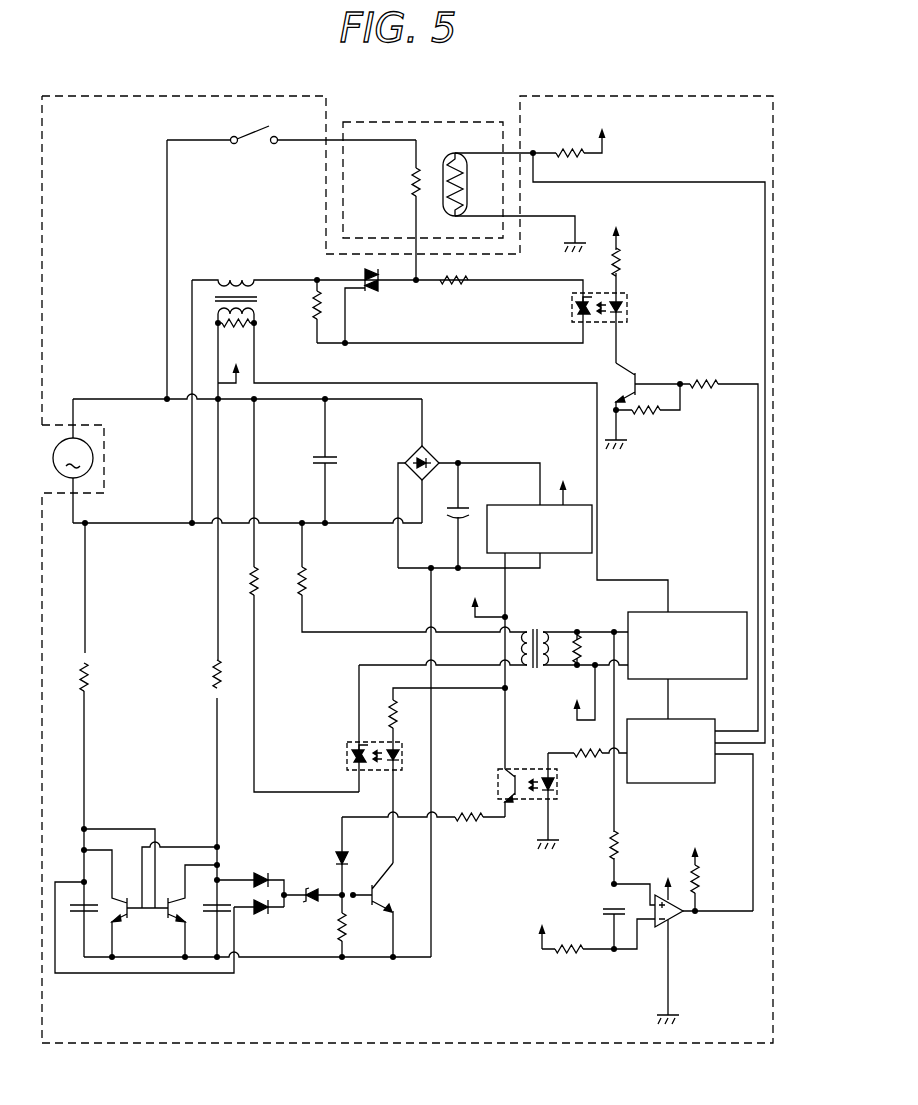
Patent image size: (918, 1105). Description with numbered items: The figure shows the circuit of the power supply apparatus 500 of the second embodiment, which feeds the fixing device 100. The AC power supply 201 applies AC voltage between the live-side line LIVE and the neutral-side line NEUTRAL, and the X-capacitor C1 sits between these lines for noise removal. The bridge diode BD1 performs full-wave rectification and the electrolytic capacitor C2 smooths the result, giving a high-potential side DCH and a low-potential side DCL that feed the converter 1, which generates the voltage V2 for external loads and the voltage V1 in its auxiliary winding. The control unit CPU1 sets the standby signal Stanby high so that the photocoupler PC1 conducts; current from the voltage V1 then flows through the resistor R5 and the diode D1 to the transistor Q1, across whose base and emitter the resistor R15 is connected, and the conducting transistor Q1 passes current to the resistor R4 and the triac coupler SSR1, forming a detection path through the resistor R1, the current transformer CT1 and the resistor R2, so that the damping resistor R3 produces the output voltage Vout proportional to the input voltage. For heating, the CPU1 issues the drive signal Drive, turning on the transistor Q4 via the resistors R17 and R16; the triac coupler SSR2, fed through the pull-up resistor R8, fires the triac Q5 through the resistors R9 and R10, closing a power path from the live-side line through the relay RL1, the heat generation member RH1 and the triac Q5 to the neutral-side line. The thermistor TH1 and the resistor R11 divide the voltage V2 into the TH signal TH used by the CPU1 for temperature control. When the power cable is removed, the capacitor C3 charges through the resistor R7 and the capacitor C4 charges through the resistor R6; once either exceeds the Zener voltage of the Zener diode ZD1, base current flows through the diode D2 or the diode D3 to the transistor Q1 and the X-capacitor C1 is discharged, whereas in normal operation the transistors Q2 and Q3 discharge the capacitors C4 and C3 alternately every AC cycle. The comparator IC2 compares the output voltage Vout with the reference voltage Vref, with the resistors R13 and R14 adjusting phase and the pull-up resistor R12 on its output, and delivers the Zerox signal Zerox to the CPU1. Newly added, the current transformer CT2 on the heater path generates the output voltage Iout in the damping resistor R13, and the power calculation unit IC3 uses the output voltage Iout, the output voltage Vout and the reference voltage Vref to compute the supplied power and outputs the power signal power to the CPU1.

The power supply apparatus 500 is at (122, 96).
The fixing device 100 is at (443, 122).
The AC power supply 201 is at (94, 457).
The converter 1 is at (550, 556).
The relay RL1 is at (251, 148).
The heat generation member RH1 is at (410, 180).
The thermistor TH1 is at (468, 186).
The TH signal TH is at (672, 180).
The resistor R11 is at (567, 148).
The current transformer CT2 is at (238, 280).
The damping resistor R13 is at (216, 322).
The resistor R9 is at (314, 300).
The triac Q5 is at (362, 293).
The resistor R10 is at (460, 292).
The phototriac coupler SSR2 is at (628, 303).
The pull-up resistor R8 is at (624, 262).
The transistor Q4 is at (630, 372).
The resistor R17 is at (704, 376).
The resistor R16 is at (646, 418).
The X-capacitor C1 is at (318, 455).
The bridge diode BD1 is at (407, 452).
The electrolytic capacitor C2 is at (470, 508).
The resistor R1 is at (258, 580).
The resistor R2 is at (308, 580).
The current transformer CT1 is at (528, 632).
The damping resistor R3 is at (552, 665).
The power calculation unit IC3 is at (705, 612).
The control unit CPU1 is at (660, 783).
The resistor R4 is at (390, 712).
The phototriac coupler SSR1 is at (350, 744).
The photocoupler PC1 is at (526, 769).
The resistor R5 is at (460, 826).
The diode D1 is at (338, 853).
The Zener diode ZD1 is at (306, 888).
The transistor Q1 is at (388, 897).
The resistor R15 is at (338, 927).
The diode D2 is at (262, 873).
The diode D3 is at (260, 918).
The resistor R6 is at (90, 672).
The resistor R7 is at (210, 678).
The capacitor C4 is at (88, 918).
The capacitor C3 is at (208, 922).
The transistor Q2 is at (118, 922).
The transistor Q3 is at (176, 922).
The comparator IC2 is at (681, 922).
The pull-up resistor R12 is at (700, 880).
The resistor R14 is at (565, 958).
The live-side line LIVE is at (127, 398).
The neutral-side line NEUTRAL is at (140, 525).
The high electric potential side DCH is at (481, 462).
The low electric potential side DCL is at (412, 568).
The voltage V1 is at (487, 595).
The voltage V2 is at (629, 500).
The reference voltage Vref is at (406, 643).
The output voltage Vout is at (592, 632).
The output voltage Iout is at (638, 580).
The drive signal Drive is at (758, 420).
The power signal power is at (668, 702).
The standby signal Stanby is at (588, 763).
The Zerox signal Zerox is at (750, 781).